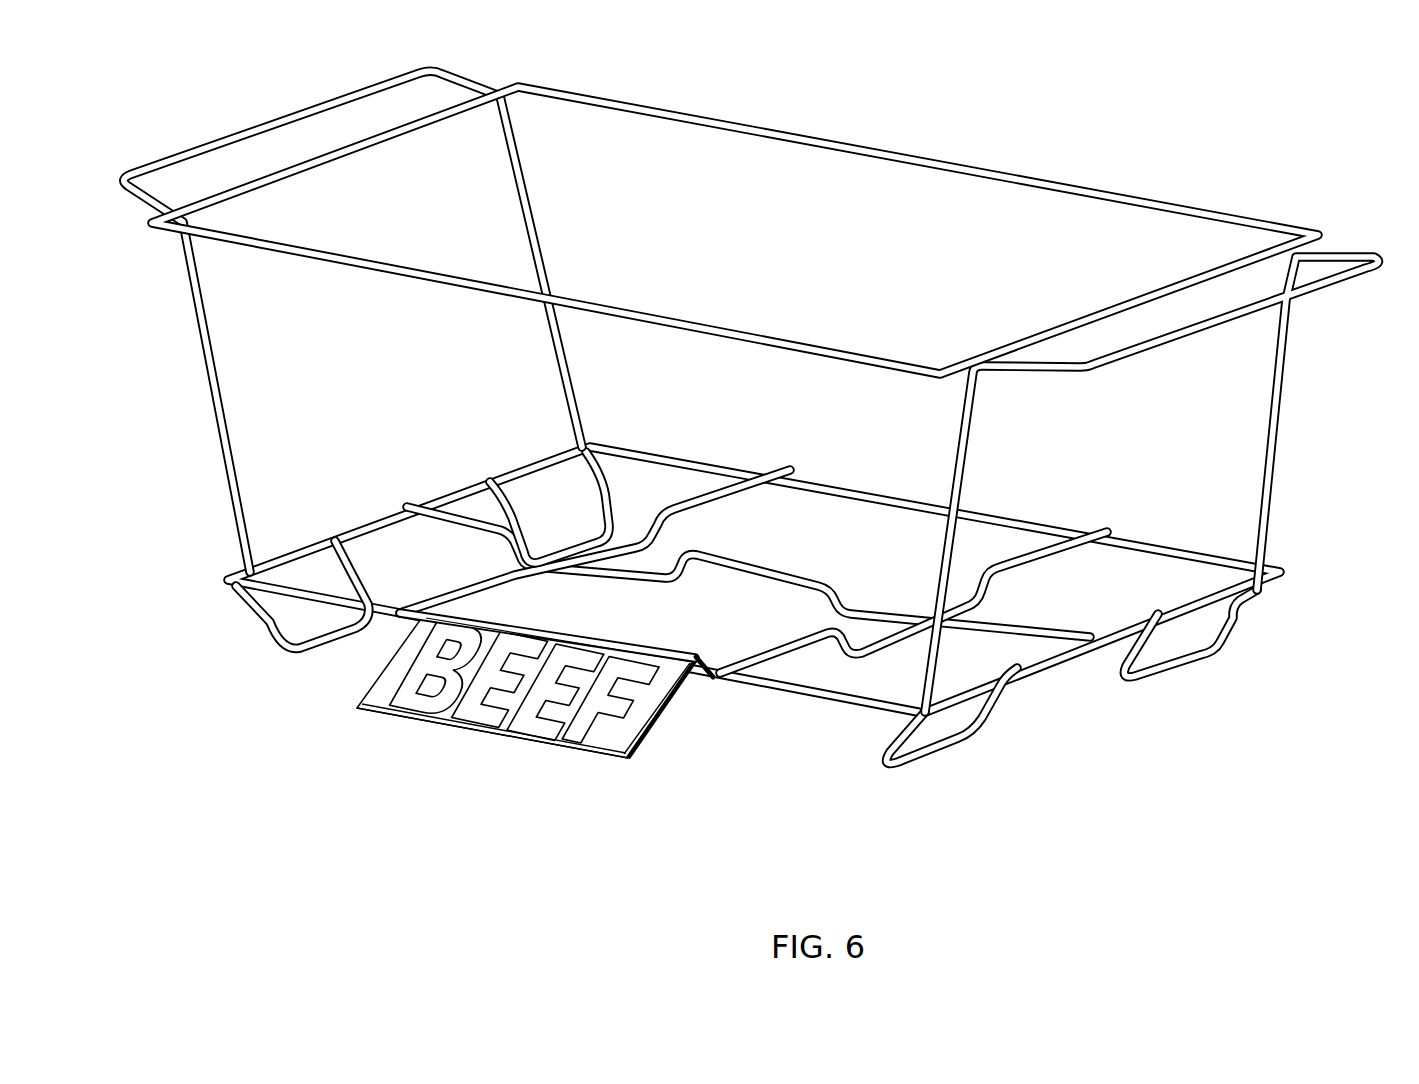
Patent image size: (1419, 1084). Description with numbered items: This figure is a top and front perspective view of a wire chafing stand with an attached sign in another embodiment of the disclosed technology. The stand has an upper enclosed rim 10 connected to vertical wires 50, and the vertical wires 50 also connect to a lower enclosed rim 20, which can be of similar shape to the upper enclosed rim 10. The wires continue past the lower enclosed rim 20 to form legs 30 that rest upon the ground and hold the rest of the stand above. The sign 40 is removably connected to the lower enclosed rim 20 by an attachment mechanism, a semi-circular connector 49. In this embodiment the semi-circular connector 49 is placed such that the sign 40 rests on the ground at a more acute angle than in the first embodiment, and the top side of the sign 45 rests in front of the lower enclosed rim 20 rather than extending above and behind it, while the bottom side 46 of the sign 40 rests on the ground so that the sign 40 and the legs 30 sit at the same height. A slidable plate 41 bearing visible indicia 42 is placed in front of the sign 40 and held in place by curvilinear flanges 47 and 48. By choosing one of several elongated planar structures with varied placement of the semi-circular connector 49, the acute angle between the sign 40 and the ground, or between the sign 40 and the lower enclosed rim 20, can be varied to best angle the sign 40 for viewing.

The upper enclosed rim 10 is at (728, 125).
The lower enclosed rim 20 is at (846, 488).
The legs 30 is at (1133, 676).
The sign 40 is at (572, 719).
The slidable plate 41 is at (651, 697).
The visible indicia 42 is at (651, 669).
The top side of the sign 45 is at (570, 625).
The bottom side of the sign 46 is at (488, 738).
The curvilinear flange 47 is at (604, 645).
The curvilinear flange 48 is at (553, 744).
The semi-circular connector 49 is at (704, 663).
The vertical wires 50 is at (1285, 353).